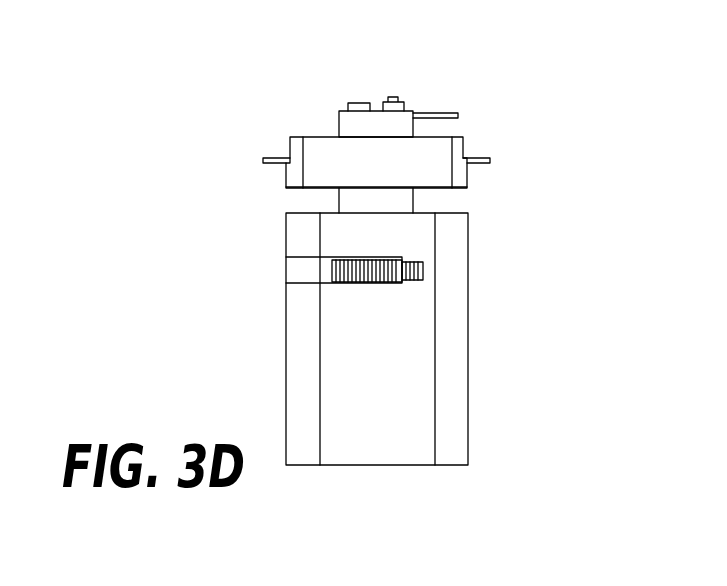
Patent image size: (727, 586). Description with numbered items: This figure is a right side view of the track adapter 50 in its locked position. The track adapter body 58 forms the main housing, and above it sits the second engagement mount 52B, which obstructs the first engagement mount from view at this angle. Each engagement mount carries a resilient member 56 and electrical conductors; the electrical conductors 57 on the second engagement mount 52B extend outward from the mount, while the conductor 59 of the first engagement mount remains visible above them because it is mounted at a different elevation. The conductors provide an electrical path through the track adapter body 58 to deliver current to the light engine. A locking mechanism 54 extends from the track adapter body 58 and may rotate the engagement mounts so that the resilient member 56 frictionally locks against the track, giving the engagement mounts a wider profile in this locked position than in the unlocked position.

The track adapter 50 is at (268, 322).
The second engagement mount 52B is at (430, 147).
The locking mechanism 54 is at (423, 271).
The resilient member 56 is at (286, 186).
The electrical conductor 57 is at (266, 157).
The track adapter body 58 is at (468, 373).
The electrical conductor 59 is at (433, 113).